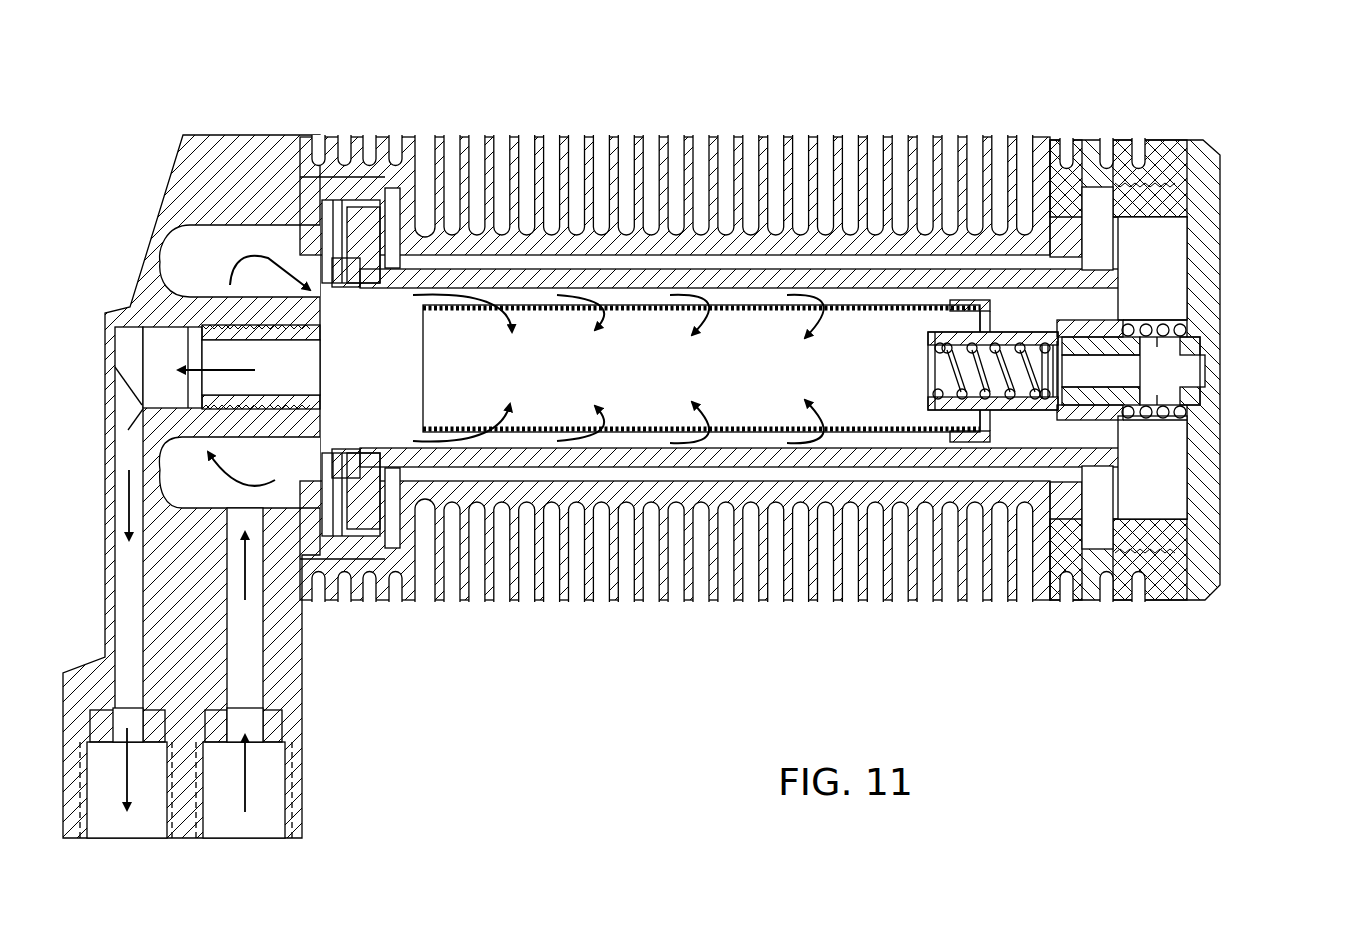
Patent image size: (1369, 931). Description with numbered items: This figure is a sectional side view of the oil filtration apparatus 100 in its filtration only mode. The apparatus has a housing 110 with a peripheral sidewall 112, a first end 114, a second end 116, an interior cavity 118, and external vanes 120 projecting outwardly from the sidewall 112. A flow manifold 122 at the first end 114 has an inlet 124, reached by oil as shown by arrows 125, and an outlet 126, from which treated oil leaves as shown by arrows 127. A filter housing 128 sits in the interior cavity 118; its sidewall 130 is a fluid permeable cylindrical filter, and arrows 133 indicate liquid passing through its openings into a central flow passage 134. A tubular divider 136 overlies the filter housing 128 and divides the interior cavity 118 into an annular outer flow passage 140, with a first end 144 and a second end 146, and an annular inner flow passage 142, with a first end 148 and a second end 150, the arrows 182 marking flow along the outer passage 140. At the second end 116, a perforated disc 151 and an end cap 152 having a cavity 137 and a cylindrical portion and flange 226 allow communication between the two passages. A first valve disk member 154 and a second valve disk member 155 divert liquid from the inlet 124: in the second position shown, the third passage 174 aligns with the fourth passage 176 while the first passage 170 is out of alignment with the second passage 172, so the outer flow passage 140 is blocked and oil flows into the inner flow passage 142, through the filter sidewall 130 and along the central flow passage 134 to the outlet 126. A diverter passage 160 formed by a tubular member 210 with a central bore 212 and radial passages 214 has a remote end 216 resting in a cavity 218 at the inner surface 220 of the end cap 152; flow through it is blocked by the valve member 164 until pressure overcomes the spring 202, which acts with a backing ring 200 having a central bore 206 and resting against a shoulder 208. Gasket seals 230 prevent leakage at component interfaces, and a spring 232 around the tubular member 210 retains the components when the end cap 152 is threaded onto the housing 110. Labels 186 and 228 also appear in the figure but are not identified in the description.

The oil filtration apparatus 100 is at (1078, 685).
The housing 110 is at (668, 612).
The peripheral sidewall 112 is at (915, 255).
The first end 114 is at (330, 165).
The second end 116 is at (1185, 145).
The interior cavity 118 is at (701, 368).
The external vanes 120 is at (825, 252).
The flow manifold 122 is at (178, 172).
The inlet 124 is at (325, 185).
The arrows 125 is at (248, 783).
The outlet 126 is at (453, 368).
The arrows 127 is at (148, 778).
The filter housing 128 is at (538, 366).
The sidewall 130 is at (613, 354).
The arrows 133 is at (690, 403).
The central flow passage 134 is at (760, 349).
The tubular divider 136 is at (590, 460).
The cavity 137 is at (1160, 495).
The annular outer flow passage 140 is at (550, 258).
The annular inner flow passage 142 is at (735, 285).
The first end 144 is at (390, 262).
The second end 146 is at (1068, 225).
The first end 148 is at (325, 256).
The second end 150 is at (1012, 430).
The perforated disc 151 is at (1100, 195).
The end cap 152 is at (1212, 578).
The first valve disk member 154 is at (343, 190).
The second valve disk member 155 is at (338, 215).
The diverter passage 160 is at (1140, 405).
The valve member 164 is at (1130, 430).
The first passage 170 is at (373, 500).
The second passage 172 is at (330, 232).
The third passage 174 is at (380, 300).
The fourth passage 176 is at (318, 325).
The arrows 182 is at (852, 475).
The cartridge end 186 is at (443, 368).
The backing ring 200 is at (932, 388).
The spring 202 is at (963, 325).
The central bore 206 is at (937, 363).
The shoulder 208 is at (930, 412).
The tubular member 210 is at (1142, 348).
The central bore 212 is at (1185, 362).
The radial passages 214 is at (1150, 326).
The remote end 216 is at (1208, 372).
The cavity 218 is at (1160, 414).
The inner surface 220 is at (1195, 252).
The cylindrical portion 226 is at (1165, 538).
The cap bottom 228 is at (1195, 590).
The gasket seals 230 is at (316, 165).
The spring 232 is at (1195, 330).